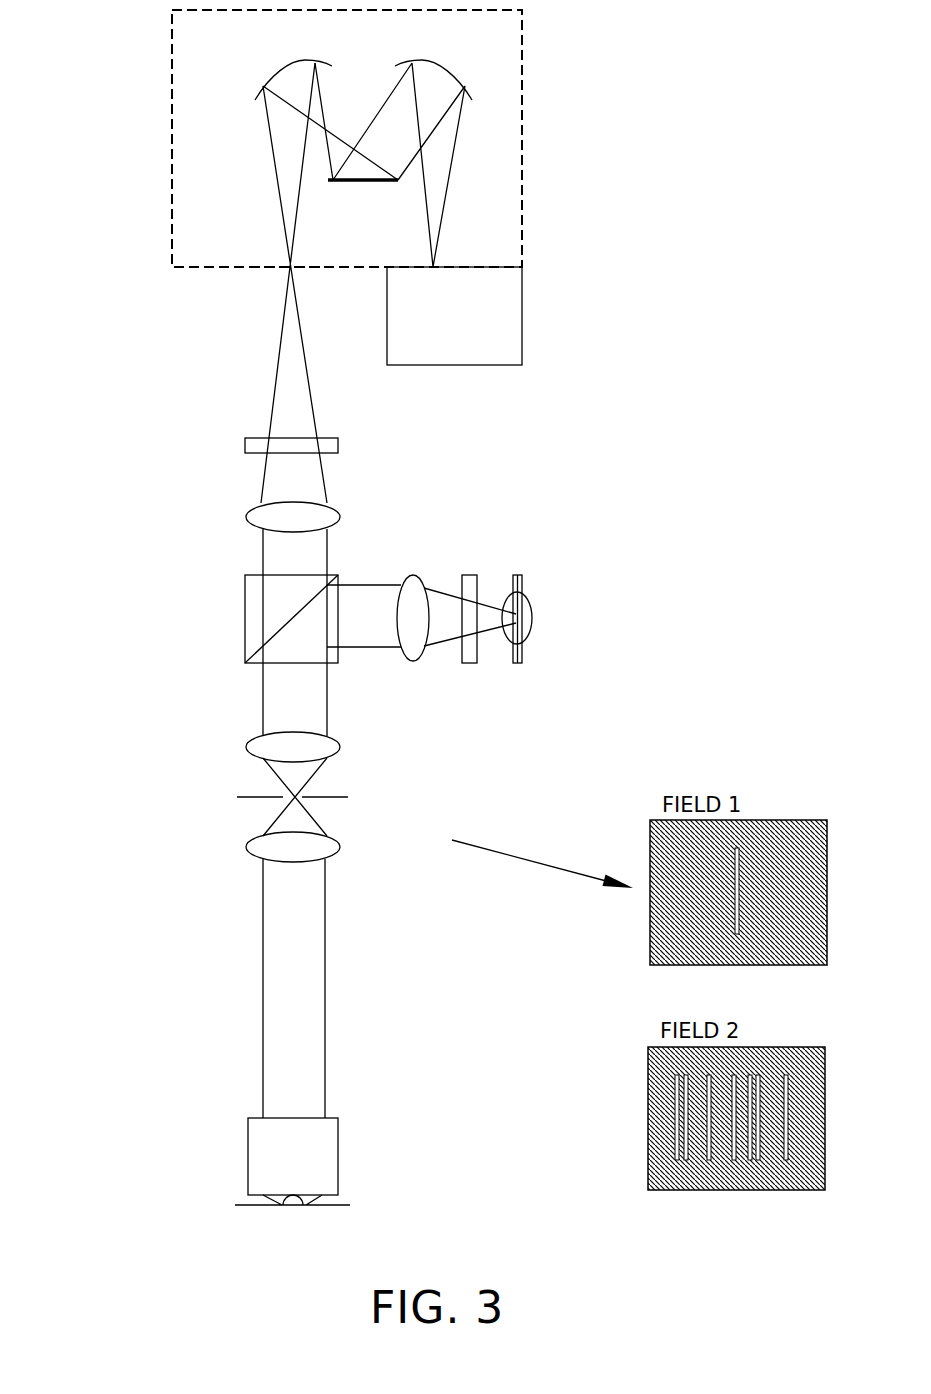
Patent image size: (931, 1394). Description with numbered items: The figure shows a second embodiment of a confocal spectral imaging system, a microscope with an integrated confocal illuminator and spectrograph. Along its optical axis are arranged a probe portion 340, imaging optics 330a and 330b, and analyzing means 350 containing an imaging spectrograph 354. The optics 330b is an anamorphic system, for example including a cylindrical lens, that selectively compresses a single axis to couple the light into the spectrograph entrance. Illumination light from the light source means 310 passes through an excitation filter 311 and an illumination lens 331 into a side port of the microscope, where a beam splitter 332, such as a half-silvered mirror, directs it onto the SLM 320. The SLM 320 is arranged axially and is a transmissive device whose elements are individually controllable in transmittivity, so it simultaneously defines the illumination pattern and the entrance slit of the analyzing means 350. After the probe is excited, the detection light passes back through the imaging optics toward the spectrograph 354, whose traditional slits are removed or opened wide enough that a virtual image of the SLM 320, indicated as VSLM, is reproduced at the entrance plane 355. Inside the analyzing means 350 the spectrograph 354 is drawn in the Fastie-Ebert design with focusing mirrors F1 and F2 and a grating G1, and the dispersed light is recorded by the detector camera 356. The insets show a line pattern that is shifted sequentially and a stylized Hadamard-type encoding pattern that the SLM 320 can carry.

The light source means 310 is at (605, 660).
The excitation filter 311 is at (470, 665).
The SLM 320 is at (237, 797).
The imaging optics 330a is at (236, 737).
The imaging optics 330b is at (231, 530).
The illumination lens 331 is at (420, 663).
The beam splitter 332 is at (245, 617).
The probe portion 340 is at (215, 1207).
The analyzing means 350 is at (607, 200).
The imaging spectrograph 354 is at (433, 152).
The entrance plane 355 is at (253, 268).
The detector camera 356 is at (488, 330).
The virtual image of SLM VSLM is at (266, 286).
The focusing mirror F1 is at (293, 69).
The focusing mirror F2 is at (433, 69).
The grating G1 is at (363, 199).